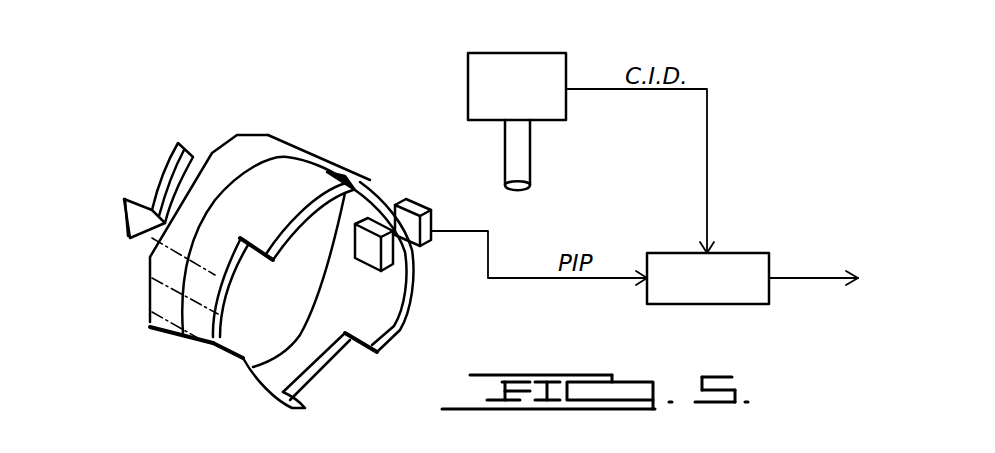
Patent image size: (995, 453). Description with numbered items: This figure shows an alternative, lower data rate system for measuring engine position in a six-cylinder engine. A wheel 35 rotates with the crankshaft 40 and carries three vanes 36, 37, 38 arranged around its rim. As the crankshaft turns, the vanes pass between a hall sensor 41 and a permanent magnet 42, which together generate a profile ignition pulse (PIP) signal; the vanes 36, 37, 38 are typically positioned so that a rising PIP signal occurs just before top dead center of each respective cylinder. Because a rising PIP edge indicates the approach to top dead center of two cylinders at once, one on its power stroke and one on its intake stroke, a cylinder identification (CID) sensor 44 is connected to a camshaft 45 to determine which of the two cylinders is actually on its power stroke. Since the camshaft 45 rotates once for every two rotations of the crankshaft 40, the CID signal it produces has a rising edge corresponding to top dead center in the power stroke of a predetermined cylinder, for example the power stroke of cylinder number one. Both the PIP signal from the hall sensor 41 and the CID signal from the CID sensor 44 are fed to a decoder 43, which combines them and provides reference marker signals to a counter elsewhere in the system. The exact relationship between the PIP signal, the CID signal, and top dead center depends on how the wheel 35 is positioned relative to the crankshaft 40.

The wheel 35 is at (282, 322).
The vane 36 is at (297, 207).
The vane 37 is at (253, 402).
The vane 38 is at (397, 313).
The crankshaft 40 is at (160, 338).
The hall sensor 41 is at (428, 200).
The permanent magnet 42 is at (372, 218).
The decoder 43 is at (756, 250).
The cylinder identification (CID) sensor 44 is at (563, 60).
The camshaft 45 is at (518, 153).